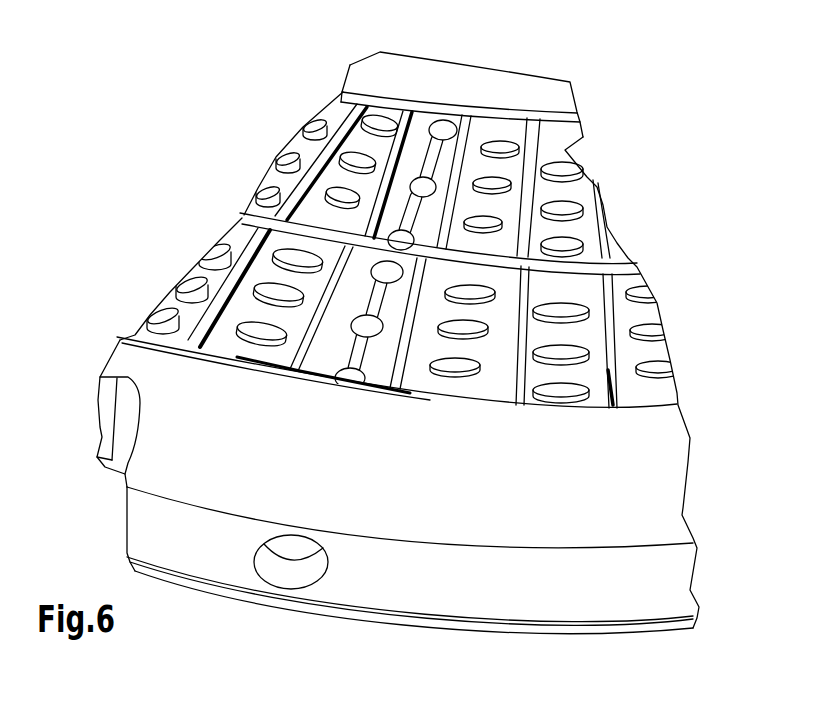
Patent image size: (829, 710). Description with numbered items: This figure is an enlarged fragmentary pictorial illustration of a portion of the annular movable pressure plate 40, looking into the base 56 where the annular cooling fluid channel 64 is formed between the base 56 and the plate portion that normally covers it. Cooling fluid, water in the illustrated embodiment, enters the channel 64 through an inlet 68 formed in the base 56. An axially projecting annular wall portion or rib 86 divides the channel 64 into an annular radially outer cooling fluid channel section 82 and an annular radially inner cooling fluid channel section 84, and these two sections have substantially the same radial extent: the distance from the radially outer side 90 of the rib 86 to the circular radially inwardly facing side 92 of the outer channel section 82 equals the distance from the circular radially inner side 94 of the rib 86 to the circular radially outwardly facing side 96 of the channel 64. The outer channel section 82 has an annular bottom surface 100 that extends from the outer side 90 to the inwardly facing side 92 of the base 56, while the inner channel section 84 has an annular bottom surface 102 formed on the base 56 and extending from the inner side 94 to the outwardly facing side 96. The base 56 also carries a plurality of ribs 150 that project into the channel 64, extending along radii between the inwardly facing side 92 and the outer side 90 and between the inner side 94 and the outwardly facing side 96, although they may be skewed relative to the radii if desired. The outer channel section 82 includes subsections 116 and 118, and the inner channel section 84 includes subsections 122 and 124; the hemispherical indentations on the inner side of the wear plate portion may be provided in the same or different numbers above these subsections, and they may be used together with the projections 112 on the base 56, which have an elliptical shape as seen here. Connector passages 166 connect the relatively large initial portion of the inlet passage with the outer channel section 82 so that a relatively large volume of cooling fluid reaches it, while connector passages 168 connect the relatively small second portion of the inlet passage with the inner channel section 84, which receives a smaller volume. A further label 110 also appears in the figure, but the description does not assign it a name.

The annular movable pressure plate 40 is at (624, 638).
The base 56 is at (148, 363).
The annular cooling fluid channel 64 is at (267, 229).
The inlet 68 is at (281, 568).
The radially outer cooling fluid channel section 82 is at (255, 269).
The radially inner cooling fluid channel section 84 is at (297, 127).
The annular wall portion or rib 86 is at (258, 212).
The radially outer side 90 is at (623, 274).
The radially inwardly facing side 92 is at (662, 397).
The radially inner side 94 is at (620, 253).
The radially outwardly facing side 96 is at (410, 237).
The annular bottom surface 100 is at (527, 373).
The annular bottom surface 102 is at (580, 112).
The pins 110 is at (573, 383).
The projections 112 is at (347, 195).
The subsection 116 is at (550, 414).
The subsection 118 is at (247, 354).
The subsection 122 is at (577, 138).
The subsection 124 is at (383, 101).
The ribs 150 is at (244, 239).
The connector passages 166 is at (373, 337).
The connector passages 168 is at (512, 170).